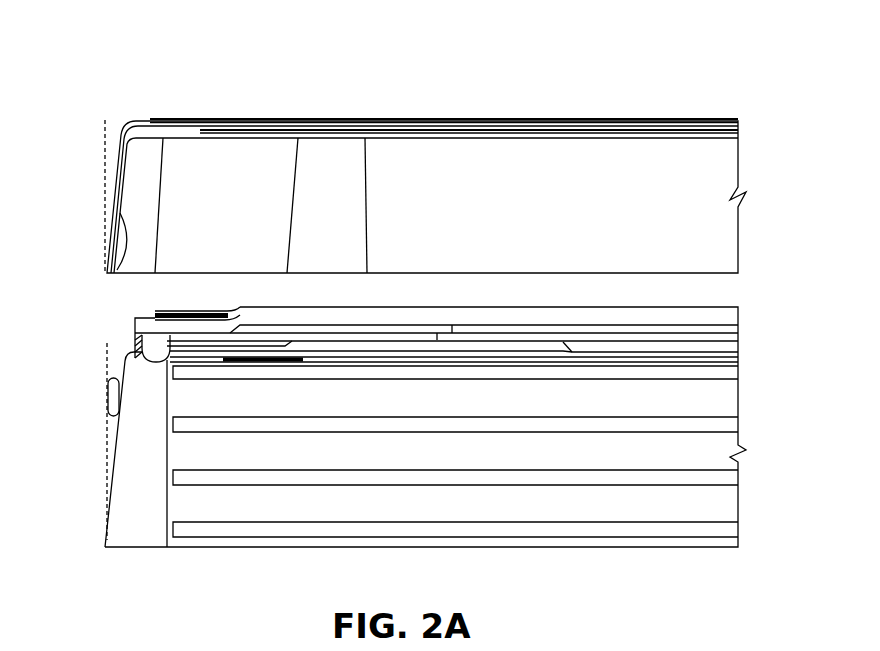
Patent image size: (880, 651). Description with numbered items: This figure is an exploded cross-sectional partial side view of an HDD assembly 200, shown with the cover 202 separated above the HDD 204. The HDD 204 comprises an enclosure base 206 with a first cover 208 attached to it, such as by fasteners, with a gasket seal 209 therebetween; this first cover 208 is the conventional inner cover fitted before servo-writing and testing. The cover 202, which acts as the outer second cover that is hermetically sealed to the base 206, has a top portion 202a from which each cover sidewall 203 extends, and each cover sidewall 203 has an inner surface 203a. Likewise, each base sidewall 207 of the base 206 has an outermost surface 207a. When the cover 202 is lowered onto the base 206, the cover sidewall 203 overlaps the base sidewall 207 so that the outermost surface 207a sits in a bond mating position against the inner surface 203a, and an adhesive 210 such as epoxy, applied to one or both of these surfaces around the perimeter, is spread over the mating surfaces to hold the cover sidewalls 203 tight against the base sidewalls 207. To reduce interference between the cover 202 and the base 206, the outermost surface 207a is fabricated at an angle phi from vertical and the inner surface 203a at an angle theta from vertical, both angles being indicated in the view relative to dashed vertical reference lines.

The HDD assembly 200 is at (126, 50).
The cover 202 is at (681, 248).
The top portion 202a is at (478, 118).
The cover sidewall 203 is at (712, 160).
The inner surface 203a is at (112, 275).
The HDD 204 is at (715, 407).
The enclosure base 206 is at (153, 540).
The base sidewall 207 is at (125, 505).
The outermost surface 207a is at (107, 435).
The first cover 208 is at (722, 318).
The gasket seal 209 is at (150, 318).
The adhesive 210 is at (110, 393).